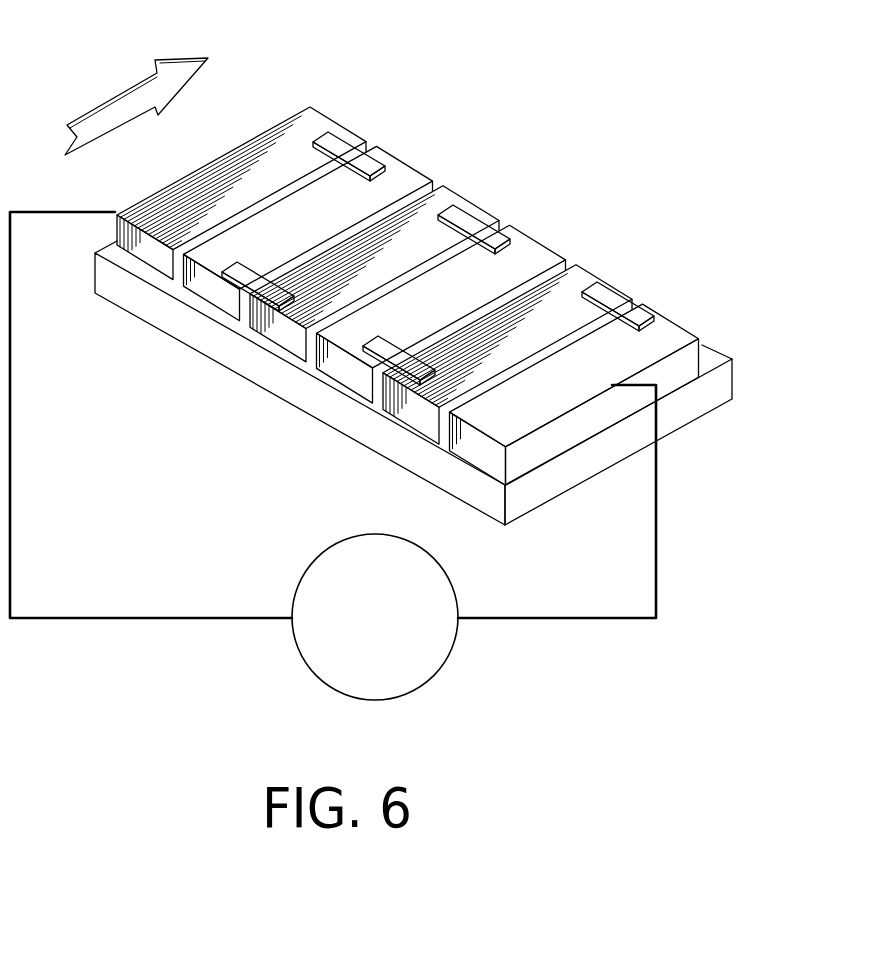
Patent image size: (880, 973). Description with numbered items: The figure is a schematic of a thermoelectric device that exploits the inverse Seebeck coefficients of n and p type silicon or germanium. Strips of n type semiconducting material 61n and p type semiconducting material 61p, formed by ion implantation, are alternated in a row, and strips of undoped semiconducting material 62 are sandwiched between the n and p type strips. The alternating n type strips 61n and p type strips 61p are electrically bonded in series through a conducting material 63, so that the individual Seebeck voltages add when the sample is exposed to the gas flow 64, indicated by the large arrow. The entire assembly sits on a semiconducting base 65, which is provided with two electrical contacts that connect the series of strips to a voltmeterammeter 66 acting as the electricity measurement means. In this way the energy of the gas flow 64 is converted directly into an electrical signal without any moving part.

The n type semiconducting strip 61n is at (240, 145).
The p type semiconducting strip 61p is at (400, 160).
The undoped semiconducting material strip 62 is at (445, 270).
The conducting material 63 is at (348, 132).
The gas flow 64 is at (117, 93).
The semiconducting base 65 is at (213, 382).
The voltmeterammeter 66 is at (437, 673).